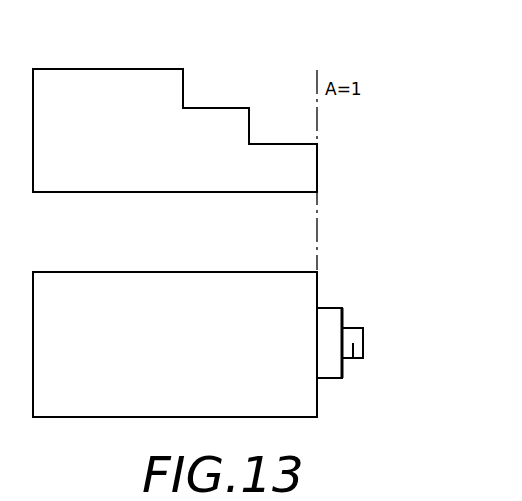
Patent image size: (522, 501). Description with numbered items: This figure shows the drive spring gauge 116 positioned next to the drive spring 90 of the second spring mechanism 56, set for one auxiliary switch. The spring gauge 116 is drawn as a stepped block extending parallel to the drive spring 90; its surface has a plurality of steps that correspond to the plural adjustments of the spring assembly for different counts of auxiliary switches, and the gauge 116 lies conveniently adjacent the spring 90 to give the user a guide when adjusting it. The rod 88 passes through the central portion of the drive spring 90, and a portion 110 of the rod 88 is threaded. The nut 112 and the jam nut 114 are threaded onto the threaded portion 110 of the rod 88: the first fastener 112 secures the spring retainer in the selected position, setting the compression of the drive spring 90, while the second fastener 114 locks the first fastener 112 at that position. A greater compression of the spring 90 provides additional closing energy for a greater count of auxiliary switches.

The spring gauge 116 is at (98, 62).
The second spring mechanism 56 is at (75, 396).
The drive spring 90 is at (312, 418).
The first threaded fastener 112 is at (331, 307).
The second threaded fastener 114 is at (329, 343).
The rod 88 is at (372, 330).
The threaded portion 110 is at (350, 359).